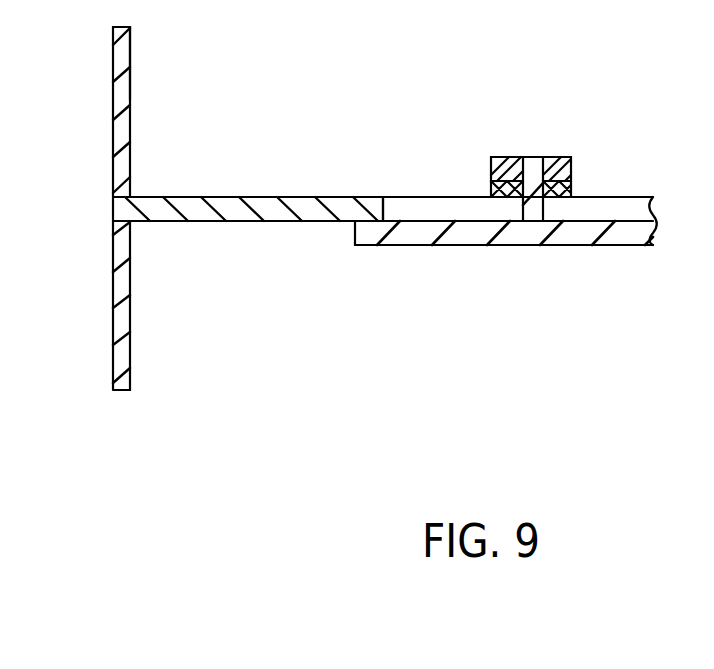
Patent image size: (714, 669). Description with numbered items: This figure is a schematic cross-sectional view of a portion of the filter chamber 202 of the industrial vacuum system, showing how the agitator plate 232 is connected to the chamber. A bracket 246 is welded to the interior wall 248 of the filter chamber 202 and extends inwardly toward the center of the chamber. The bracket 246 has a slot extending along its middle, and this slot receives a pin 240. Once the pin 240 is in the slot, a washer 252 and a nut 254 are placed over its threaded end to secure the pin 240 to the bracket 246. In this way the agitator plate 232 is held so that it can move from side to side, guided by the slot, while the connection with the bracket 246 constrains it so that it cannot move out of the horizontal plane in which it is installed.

The filter chamber 202 is at (113, 135).
The interior wall 248 is at (132, 92).
The bracket 246 is at (225, 202).
The washer 252 is at (492, 193).
The agitator plate 232 is at (570, 237).
The nut 254 is at (558, 160).
The pin 240 is at (532, 162).